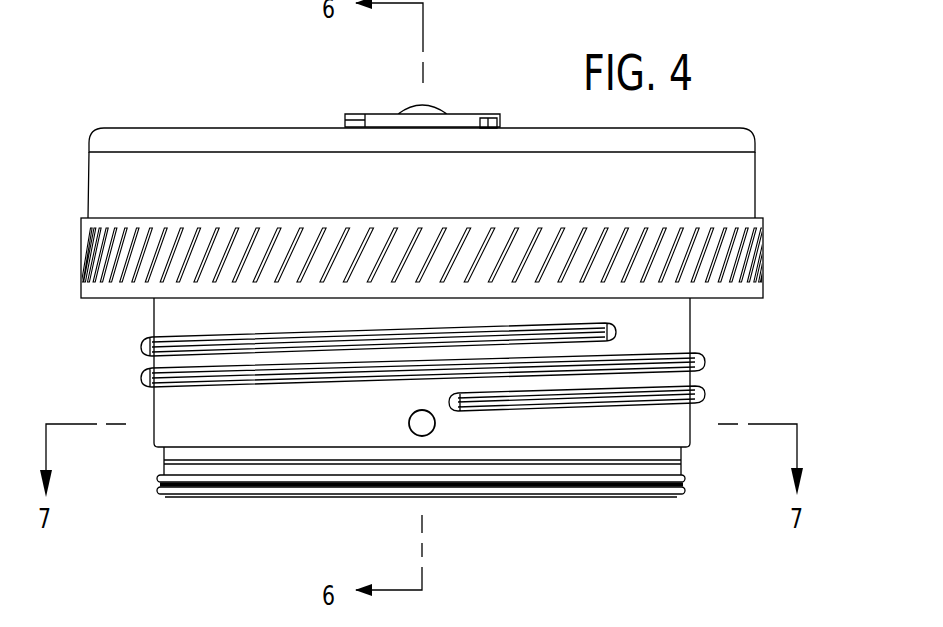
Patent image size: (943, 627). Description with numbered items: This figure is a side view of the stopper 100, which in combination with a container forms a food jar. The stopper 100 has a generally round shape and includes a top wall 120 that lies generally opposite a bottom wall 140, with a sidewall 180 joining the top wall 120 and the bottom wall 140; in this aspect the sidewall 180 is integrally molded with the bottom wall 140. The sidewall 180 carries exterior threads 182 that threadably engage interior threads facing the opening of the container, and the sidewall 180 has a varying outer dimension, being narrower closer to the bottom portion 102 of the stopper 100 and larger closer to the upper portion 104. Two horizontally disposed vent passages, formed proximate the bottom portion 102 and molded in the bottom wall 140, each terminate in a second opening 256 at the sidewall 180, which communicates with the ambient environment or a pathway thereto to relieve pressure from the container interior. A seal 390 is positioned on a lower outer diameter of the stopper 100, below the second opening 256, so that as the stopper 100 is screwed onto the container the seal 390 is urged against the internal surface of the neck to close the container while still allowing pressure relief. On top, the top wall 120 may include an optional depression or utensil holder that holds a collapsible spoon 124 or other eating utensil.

The stopper 100 is at (810, 264).
The bottom portion 102 is at (690, 420).
The upper portion 104 is at (745, 180).
The top wall 120 is at (176, 140).
The collapsible spoon 124 is at (460, 113).
The bottom wall 140 is at (545, 496).
The sidewall 180 is at (690, 313).
The exterior threads 182 is at (702, 362).
The second opening 256 is at (410, 432).
The seal 390 is at (684, 492).